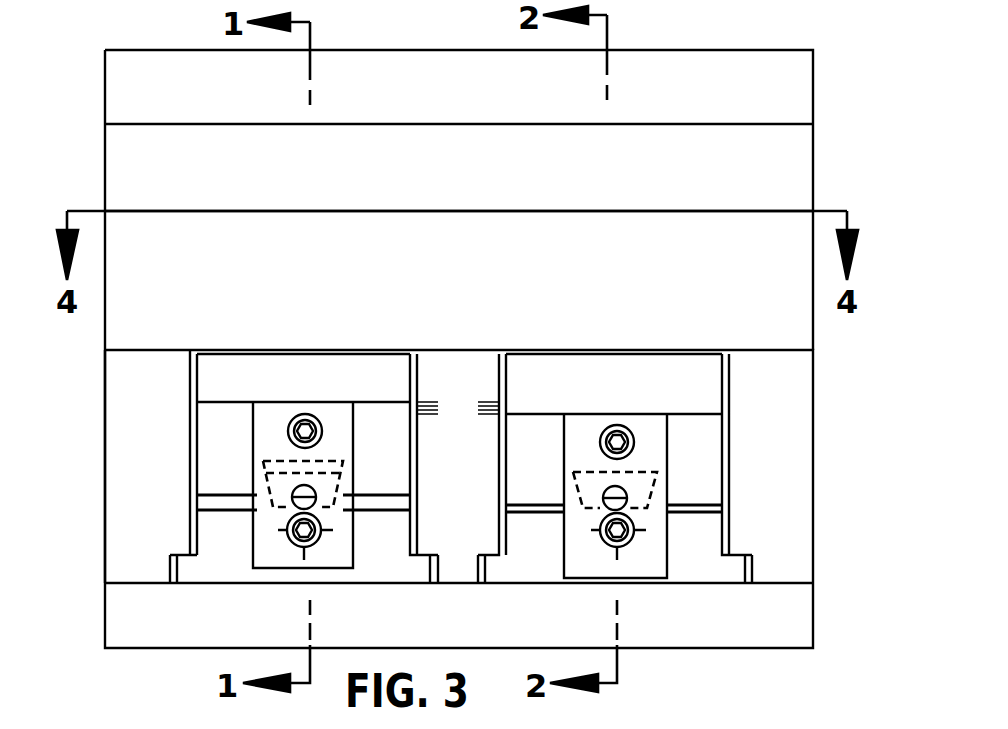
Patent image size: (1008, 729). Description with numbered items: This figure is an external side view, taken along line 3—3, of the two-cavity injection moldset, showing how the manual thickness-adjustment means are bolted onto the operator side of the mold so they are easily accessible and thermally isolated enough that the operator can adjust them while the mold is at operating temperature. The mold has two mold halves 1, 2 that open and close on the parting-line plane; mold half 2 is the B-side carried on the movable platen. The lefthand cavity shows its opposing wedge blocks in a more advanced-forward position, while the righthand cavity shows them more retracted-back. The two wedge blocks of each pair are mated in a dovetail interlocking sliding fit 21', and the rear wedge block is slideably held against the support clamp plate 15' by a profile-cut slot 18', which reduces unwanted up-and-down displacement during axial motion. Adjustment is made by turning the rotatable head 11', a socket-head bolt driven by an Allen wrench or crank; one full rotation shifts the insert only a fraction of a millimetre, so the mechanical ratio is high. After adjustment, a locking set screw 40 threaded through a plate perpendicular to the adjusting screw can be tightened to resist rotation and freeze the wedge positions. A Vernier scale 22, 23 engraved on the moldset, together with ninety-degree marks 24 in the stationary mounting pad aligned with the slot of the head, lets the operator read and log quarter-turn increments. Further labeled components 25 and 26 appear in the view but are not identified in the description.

The mold half 1 is at (822, 117).
The mold half 2 is at (824, 340).
The clamping unit 3 is at (631, 491).
The rotatable head 11' is at (193, 521).
The support clamp plate 15' is at (435, 606).
The profile-cut slot 18' is at (123, 565).
The dovetail interlocking sliding fit 21' is at (197, 469).
The Vernier scale 22 is at (430, 397).
The Vernier scale 23 is at (485, 397).
The 90 degree marks 24 is at (622, 562).
The support plate 25 is at (627, 513).
The side wall 26 is at (125, 403).
The locking set screw 40 is at (600, 520).